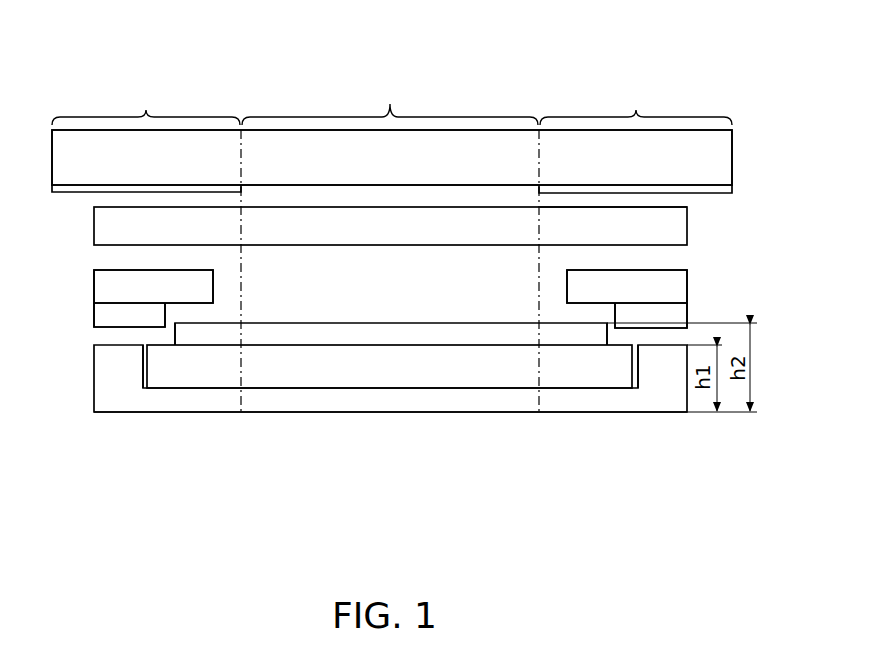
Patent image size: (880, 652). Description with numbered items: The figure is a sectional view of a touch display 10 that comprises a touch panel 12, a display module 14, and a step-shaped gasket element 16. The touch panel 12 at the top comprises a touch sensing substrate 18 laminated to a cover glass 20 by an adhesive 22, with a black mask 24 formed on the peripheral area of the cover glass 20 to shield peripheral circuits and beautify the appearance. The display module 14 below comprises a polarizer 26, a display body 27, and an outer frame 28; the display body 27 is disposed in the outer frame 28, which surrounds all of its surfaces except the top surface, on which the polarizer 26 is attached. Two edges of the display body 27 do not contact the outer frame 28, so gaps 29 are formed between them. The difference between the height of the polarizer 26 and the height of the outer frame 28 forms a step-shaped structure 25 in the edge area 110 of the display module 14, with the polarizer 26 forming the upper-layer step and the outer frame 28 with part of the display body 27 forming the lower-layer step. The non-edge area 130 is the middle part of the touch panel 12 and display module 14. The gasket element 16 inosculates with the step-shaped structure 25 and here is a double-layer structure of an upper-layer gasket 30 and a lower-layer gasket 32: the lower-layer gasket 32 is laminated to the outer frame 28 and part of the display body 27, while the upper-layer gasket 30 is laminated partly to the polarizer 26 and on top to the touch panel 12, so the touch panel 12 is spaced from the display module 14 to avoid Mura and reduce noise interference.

The touch display 10 is at (623, 558).
The touch panel 12 is at (437, 82).
The display module 14 is at (190, 421).
The gasket element 16 is at (733, 262).
The touch sensing substrate 18 is at (102, 230).
The cover glass 20 is at (60, 150).
The adhesive 22 is at (686, 205).
The black mask 24 is at (78, 188).
The step-shaped structure 25 is at (170, 335).
The polarizer 26 is at (363, 329).
The display body 27 is at (365, 373).
The outer frame 28 is at (665, 378).
The gaps 29 is at (141, 377).
The upper-layer gasket 30 is at (113, 280).
The lower-layer gasket 32 is at (113, 317).
The edge area 110 is at (392, 103).
The non-edge area 130 is at (390, 98).